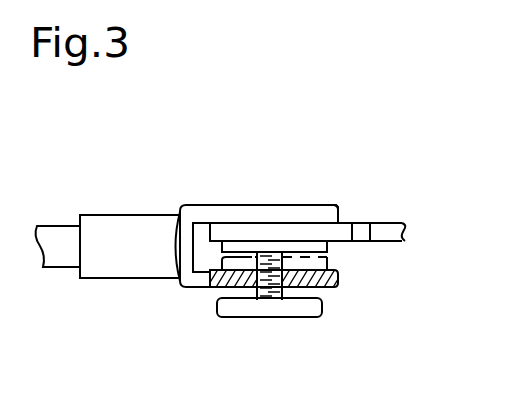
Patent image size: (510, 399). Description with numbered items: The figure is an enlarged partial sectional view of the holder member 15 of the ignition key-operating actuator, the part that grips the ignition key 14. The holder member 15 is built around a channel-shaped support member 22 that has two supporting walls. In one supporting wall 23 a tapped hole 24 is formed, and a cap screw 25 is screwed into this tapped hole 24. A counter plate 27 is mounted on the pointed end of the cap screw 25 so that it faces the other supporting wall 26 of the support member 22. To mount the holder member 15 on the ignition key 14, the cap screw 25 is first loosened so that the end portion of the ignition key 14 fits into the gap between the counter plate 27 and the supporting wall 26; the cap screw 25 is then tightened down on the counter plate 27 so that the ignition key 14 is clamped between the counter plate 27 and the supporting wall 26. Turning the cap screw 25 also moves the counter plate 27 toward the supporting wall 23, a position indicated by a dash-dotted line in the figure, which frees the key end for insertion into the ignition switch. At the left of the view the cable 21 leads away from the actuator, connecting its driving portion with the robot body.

The ignition key 14 is at (406, 238).
The holder member 15 is at (334, 197).
The cable 21 is at (63, 257).
The support member 22 is at (180, 207).
The supporting wall 23 is at (343, 277).
The tapped hole 24 is at (322, 287).
The cap screw 25 is at (265, 302).
The supporting wall 26 is at (295, 206).
The counter plate 27 is at (243, 240).